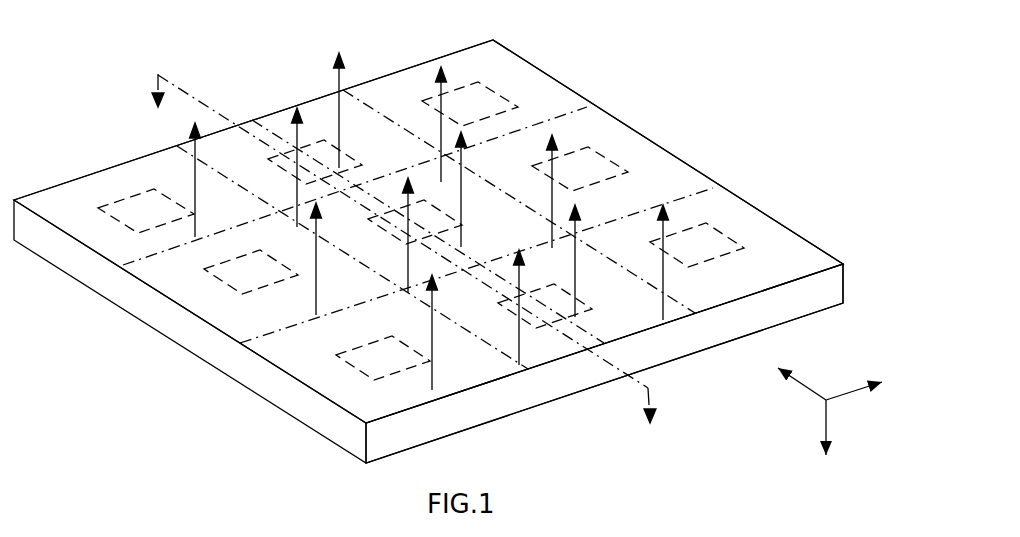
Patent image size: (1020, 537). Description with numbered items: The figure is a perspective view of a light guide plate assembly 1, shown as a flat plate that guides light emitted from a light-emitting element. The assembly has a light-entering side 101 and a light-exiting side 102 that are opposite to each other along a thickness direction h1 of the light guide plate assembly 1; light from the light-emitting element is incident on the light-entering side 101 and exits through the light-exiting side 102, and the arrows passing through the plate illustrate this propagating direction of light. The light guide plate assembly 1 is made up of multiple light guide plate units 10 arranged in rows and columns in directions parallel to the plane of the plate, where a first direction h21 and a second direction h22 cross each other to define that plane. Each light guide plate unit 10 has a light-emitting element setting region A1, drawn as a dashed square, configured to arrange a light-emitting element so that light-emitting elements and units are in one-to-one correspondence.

The light guide plate assembly 1 is at (861, 30).
The light guide plate unit 10 is at (632, 151).
The light-entering side 101 is at (550, 405).
The light-exiting side 102 is at (550, 96).
The light-emitting element setting region A1 is at (465, 88).
The thickness direction h1 is at (845, 428).
The first direction h21 is at (859, 377).
The second direction h22 is at (791, 387).